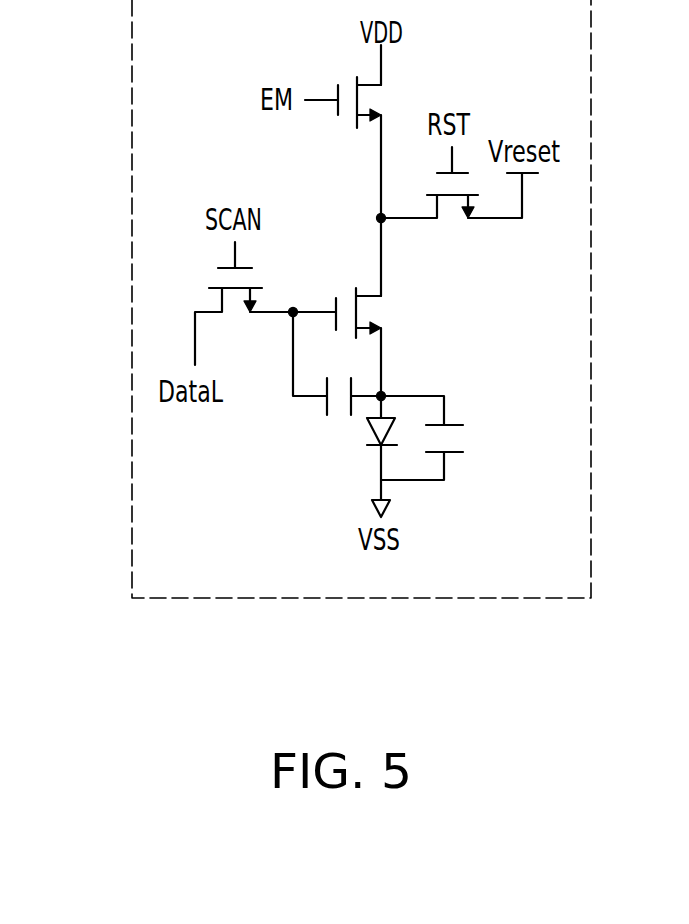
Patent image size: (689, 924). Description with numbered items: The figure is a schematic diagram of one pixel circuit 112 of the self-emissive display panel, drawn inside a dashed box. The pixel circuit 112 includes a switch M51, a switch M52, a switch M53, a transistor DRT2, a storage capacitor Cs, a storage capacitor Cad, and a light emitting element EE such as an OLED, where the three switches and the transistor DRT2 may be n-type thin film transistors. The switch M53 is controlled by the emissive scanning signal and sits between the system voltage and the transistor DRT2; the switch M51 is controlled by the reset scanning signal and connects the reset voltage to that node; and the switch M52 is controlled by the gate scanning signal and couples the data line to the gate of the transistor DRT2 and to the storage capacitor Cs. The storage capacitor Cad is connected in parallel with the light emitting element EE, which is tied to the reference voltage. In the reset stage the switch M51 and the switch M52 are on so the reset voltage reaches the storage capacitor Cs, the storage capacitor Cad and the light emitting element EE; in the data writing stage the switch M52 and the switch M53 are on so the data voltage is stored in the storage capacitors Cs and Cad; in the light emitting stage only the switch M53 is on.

The pixel circuit 112 is at (132, 354).
The switch M53 is at (345, 80).
The switch M51 is at (452, 208).
The switch M52 is at (247, 278).
The transistor DRT2 is at (367, 353).
The storage capacitor Cs is at (335, 362).
The storage capacitor Cad is at (423, 438).
The light emitting element EE is at (373, 432).